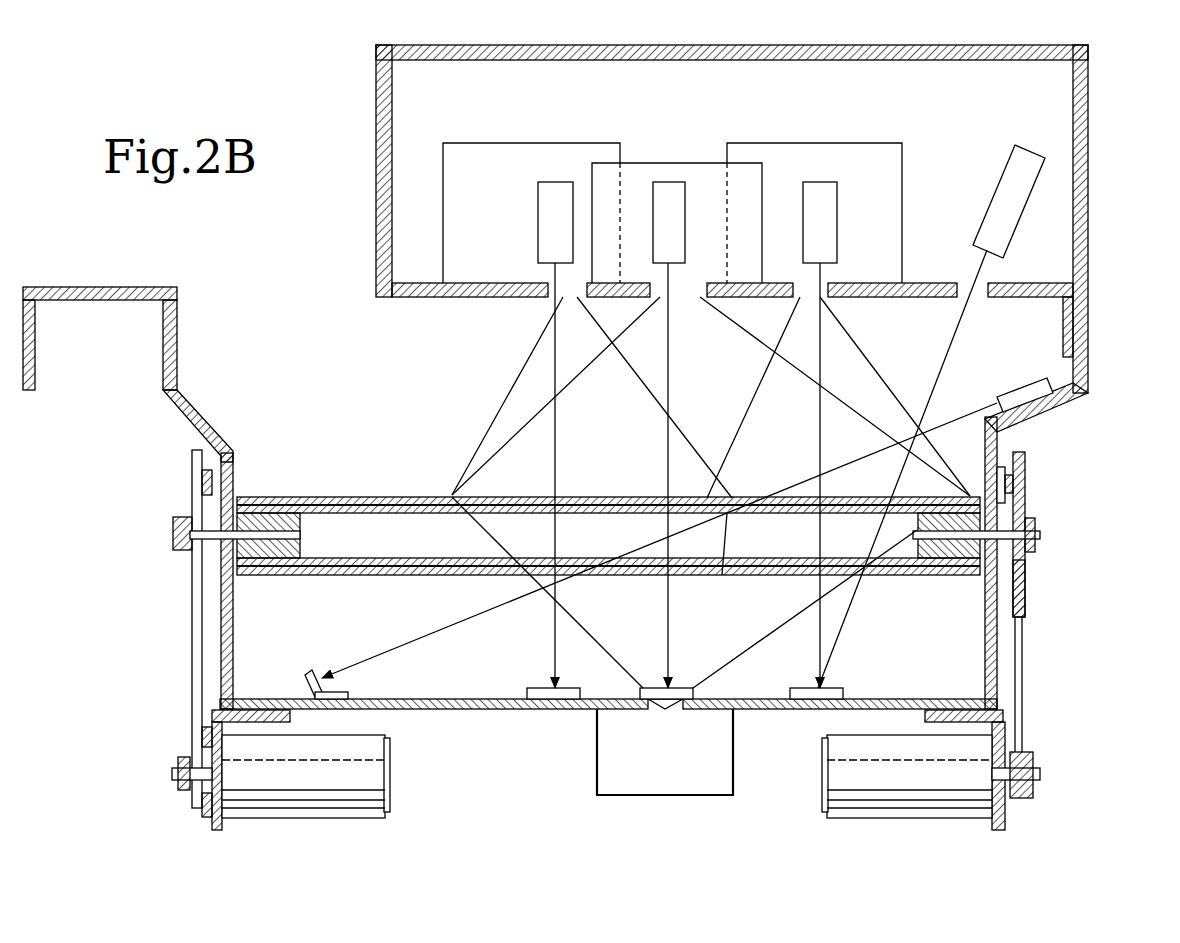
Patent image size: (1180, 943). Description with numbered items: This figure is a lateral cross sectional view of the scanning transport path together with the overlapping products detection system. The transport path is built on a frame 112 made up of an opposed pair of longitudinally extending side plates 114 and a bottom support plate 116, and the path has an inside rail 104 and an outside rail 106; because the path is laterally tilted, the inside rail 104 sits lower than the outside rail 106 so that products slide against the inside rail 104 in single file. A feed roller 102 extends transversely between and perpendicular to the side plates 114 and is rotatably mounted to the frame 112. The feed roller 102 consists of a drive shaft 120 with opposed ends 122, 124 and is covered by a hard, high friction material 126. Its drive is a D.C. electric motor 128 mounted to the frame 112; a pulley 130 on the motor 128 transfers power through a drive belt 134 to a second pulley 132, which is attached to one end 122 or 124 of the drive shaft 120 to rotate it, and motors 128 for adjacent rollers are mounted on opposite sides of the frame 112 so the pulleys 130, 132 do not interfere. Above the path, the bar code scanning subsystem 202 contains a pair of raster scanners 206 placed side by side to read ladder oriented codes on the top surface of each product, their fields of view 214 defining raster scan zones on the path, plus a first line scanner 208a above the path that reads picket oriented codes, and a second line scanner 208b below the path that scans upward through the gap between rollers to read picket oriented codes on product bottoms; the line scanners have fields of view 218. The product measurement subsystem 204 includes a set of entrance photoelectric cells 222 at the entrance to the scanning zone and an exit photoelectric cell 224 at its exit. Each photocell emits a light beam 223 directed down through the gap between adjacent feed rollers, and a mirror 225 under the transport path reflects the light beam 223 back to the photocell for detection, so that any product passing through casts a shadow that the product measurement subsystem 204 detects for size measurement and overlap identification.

The feed roller 102 is at (345, 486).
The inside rail 104 is at (985, 438).
The outside rail 106 is at (237, 462).
The frame 112 is at (507, 774).
The side plate 114 is at (233, 628).
The bottom support plate 116 is at (470, 709).
The drive shaft 120 is at (377, 496).
The drive shaft end 122 is at (212, 530).
The drive shaft end 124 is at (1027, 510).
The high friction material 126 is at (343, 575).
The electric motor 128 is at (368, 776).
The pulley 130 is at (188, 800).
The second pulley 132 is at (1025, 572).
The drive belt 134 is at (1020, 657).
The bar code scanning subsystem 202 is at (912, 155).
The product measurement subsystem 204 is at (862, 143).
The raster scanner 206 is at (503, 150).
The first line scanner 208a is at (680, 173).
The second line scanner 208b is at (703, 777).
The field of view 214 is at (510, 380).
The field of view 218 is at (752, 338).
The entrance photoelectric cell 222 is at (548, 215).
The light beam 223 is at (958, 343).
The exit photoelectric cell 224 is at (1023, 168).
The mirror 225 is at (303, 686).